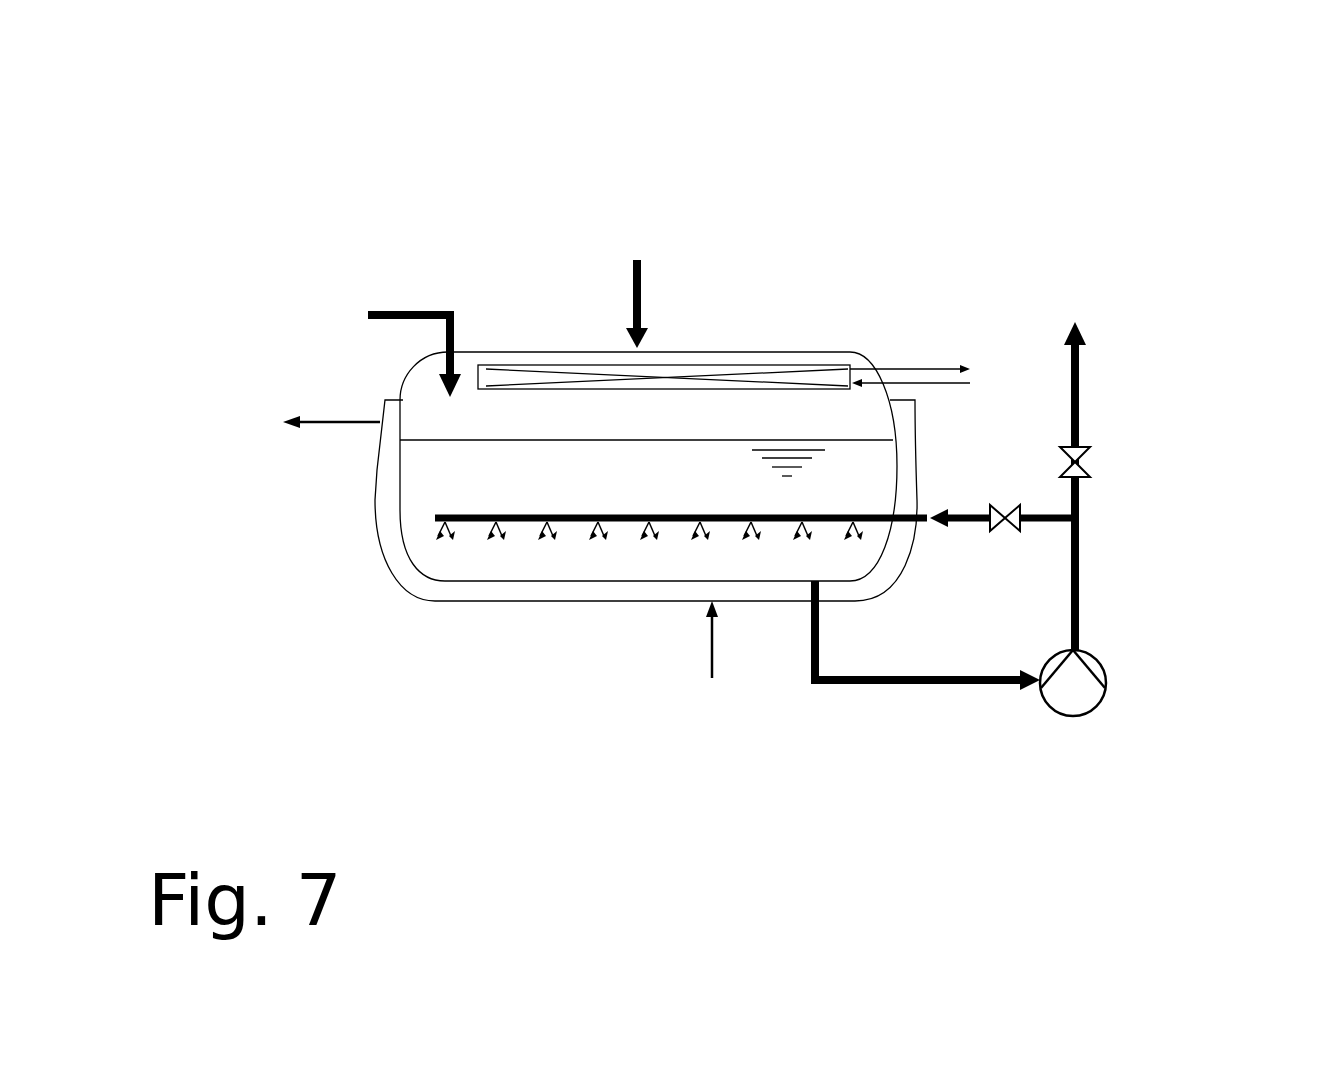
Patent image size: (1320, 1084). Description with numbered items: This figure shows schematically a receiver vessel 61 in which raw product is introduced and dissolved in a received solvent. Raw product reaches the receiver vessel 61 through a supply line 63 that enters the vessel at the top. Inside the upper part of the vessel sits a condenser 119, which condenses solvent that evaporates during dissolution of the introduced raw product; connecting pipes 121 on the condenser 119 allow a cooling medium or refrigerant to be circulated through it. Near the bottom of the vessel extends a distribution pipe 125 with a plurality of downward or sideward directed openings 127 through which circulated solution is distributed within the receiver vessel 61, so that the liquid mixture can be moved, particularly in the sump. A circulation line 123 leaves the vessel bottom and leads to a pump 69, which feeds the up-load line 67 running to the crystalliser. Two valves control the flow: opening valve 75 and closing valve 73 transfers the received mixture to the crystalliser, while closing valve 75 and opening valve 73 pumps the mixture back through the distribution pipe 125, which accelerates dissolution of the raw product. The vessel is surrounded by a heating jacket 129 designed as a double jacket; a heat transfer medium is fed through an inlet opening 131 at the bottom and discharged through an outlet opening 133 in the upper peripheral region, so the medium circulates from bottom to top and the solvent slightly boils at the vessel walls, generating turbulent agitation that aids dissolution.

The receiver vessel 61 is at (700, 205).
The supply line 63 is at (388, 310).
The up-load line 67 is at (1078, 390).
The pump 69 is at (1103, 698).
The valve 73 is at (1002, 503).
The valve 75 is at (1087, 462).
The condenser 119 is at (725, 360).
The connecting pipes 121 is at (905, 366).
The circulation line 123 is at (913, 670).
The distribution pipe 125 is at (455, 510).
The openings 127 is at (590, 516).
The heating jacket 129 is at (407, 577).
The inlet opening 131 is at (703, 612).
The outlet opening 133 is at (380, 418).